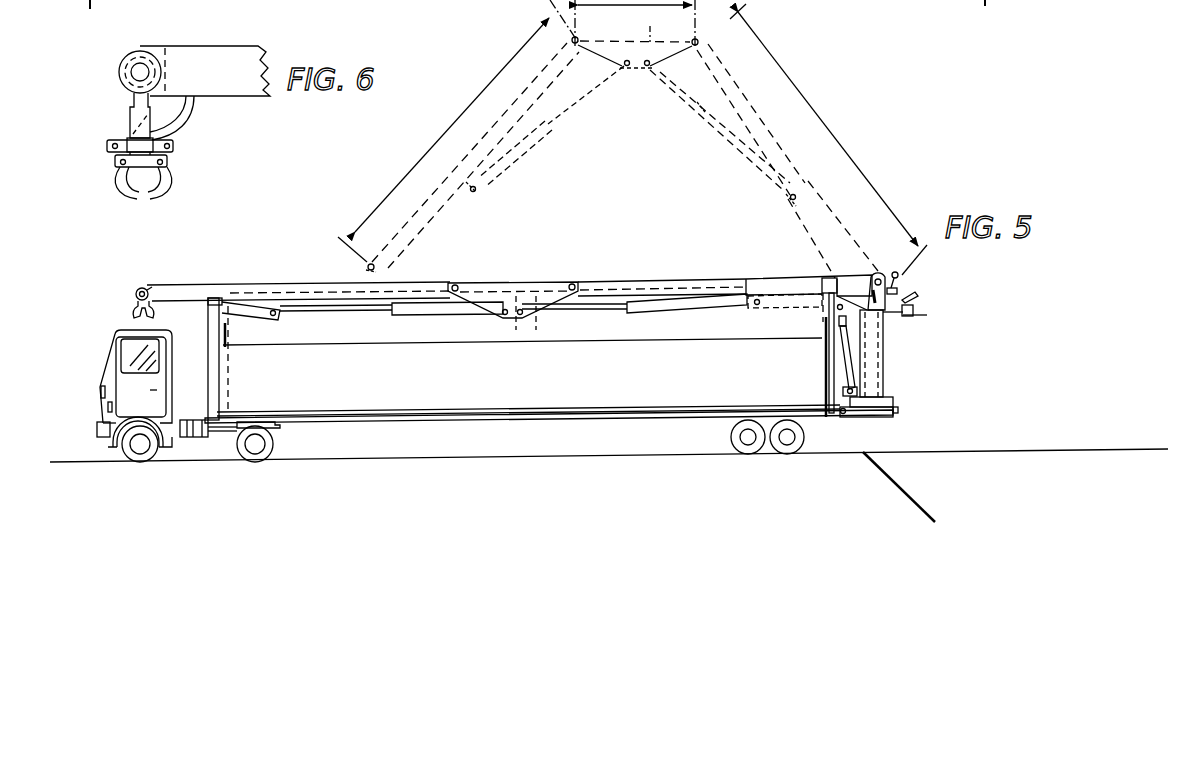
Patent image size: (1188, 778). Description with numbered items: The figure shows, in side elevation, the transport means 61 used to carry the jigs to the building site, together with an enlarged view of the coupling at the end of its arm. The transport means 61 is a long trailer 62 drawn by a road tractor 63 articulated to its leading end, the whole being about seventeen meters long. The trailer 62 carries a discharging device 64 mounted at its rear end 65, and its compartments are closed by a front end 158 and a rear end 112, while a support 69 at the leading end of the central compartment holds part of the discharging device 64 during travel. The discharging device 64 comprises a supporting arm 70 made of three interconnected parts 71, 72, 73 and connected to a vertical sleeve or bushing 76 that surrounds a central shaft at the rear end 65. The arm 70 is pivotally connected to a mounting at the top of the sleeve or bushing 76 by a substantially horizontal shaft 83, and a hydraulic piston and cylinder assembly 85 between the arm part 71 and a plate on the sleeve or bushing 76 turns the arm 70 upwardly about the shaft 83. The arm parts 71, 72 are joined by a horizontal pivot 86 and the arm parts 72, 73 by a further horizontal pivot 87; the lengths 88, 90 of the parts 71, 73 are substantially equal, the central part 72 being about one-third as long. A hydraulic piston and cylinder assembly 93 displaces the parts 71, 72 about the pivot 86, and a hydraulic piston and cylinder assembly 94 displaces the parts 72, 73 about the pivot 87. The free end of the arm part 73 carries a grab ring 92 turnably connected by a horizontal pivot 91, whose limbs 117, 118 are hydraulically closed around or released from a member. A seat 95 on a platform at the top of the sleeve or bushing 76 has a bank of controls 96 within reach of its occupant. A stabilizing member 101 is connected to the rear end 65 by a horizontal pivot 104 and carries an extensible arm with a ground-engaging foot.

In FIG. 5, the transport means 61 is at (460, 426).
In FIG. 5, the trailer 62 is at (565, 418).
In FIG. 5, the road tractor 63 is at (169, 396).
In FIG. 5, the discharging device 64 is at (664, 268).
In FIG. 5, the rear end of the trailer 65 is at (894, 417).
In FIG. 5, the support 69 is at (215, 306).
In FIG. 5, the supporting arm 70 is at (739, 279).
In FIG. 5, the arm part 71 is at (598, 283).
In FIG. 5, the arm part 72 is at (521, 283).
In FIG. 6, the arm part 73 is at (218, 48).
In FIG. 5, the arm part 73 is at (298, 285).
In FIG. 5, the sleeve or bushing 76 is at (885, 358).
In FIG. 5, the horizontal shaft 83 is at (879, 276).
In FIG. 5, the hydraulic piston and cylinder assembly 85 is at (845, 340).
In FIG. 5, the horizontal pivot 86 is at (700, 42).
In FIG. 5, the horizontal pivot 87 is at (536, 5).
In FIG. 5, the length of arm part 88 is at (850, 153).
In FIG. 5, the length of arm part 90 is at (485, 88).
In FIG. 6, the horizontal pivot 91 is at (138, 50).
In FIG. 5, the horizontal pivot 91 is at (150, 288).
In FIG. 6, the grab ring 92 is at (110, 157).
In FIG. 5, the grab ring 92 is at (131, 314).
In FIG. 5, the hydraulic piston and cylinder assembly 93 is at (690, 312).
In FIG. 5, the hydraulic piston and cylinder assembly 94 is at (441, 314).
In FIG. 5, the seat 95 is at (927, 314).
In FIG. 5, the bank of controls 96 is at (905, 283).
In FIG. 5, the stabilizing member 101 is at (826, 374).
In FIG. 5, the horizontal pivot 104 is at (843, 414).
In FIG. 5, the closed end 112 is at (822, 326).
In FIG. 6, the limb 117 is at (123, 191).
In FIG. 6, the limb 118 is at (165, 195).
In FIG. 5, the closed end 158 is at (229, 330).